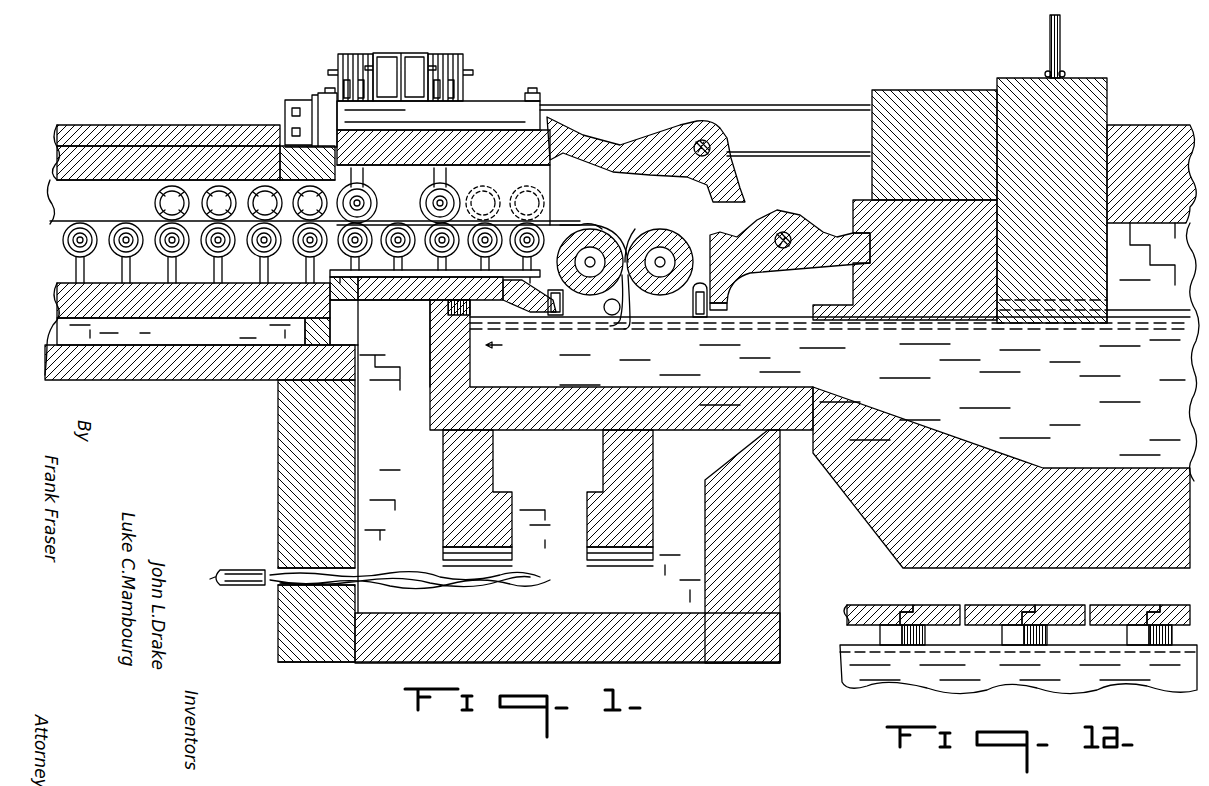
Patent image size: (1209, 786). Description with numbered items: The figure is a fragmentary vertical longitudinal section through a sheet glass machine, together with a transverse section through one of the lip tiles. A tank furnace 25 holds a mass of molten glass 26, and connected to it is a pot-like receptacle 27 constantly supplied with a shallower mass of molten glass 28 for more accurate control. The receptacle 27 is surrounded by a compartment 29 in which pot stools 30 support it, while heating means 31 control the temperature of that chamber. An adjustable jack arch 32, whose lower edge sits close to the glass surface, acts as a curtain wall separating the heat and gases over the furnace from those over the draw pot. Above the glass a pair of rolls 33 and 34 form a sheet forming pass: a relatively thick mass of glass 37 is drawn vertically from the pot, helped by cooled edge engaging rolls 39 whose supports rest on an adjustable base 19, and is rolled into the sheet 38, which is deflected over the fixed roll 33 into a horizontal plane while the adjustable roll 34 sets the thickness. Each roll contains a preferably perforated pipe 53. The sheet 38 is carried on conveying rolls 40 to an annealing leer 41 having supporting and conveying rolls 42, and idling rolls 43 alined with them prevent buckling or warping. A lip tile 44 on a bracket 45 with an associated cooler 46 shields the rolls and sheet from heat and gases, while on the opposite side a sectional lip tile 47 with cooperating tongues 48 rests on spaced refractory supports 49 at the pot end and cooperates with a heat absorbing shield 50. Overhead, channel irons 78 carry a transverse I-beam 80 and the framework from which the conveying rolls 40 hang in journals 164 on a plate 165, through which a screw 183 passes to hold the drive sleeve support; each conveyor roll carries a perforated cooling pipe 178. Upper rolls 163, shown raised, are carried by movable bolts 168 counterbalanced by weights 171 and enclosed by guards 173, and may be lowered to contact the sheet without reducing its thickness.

In FIG. 1, the adjustable base 19 is at (496, 357).
In FIG. 1, the tank furnace 25 is at (1114, 566).
In FIG. 1, the molten glass 26 is at (1138, 333).
In FIG. 1, the receptacle 27 is at (432, 404).
In FIG. 1, the molten glass 28 is at (546, 392).
In FIG. 1, the compartment 29 is at (302, 492).
In FIG. 1, the pot stools 30 is at (458, 441).
In FIG. 1, the heating means 31 is at (238, 582).
In FIG. 1, the jack arch 32 is at (1098, 106).
In FIG. 1, the roll 33 is at (590, 238).
In FIG. 1, the roll 34 is at (664, 236).
In FIG. 1, the mass of glass 37 is at (626, 333).
In FIG. 1, the sheet 38 is at (564, 226).
In FIG. 1, the edge engaging rolls 39 is at (625, 311).
In FIG. 1, the conveying rolls 40 is at (415, 284).
In FIG. 1, the annealing leer 41 is at (145, 146).
In FIG. 1, the supporting and conveying rolls 42 is at (174, 262).
In FIG. 1, the rolls 43 is at (155, 202).
In FIG. 1, the lip tile 44 is at (823, 231).
In FIG. 1, the bracket 45 is at (784, 232).
In FIG. 1, the cooler 46 is at (718, 308).
In FIG. 1, the lip tile 47 is at (409, 317).
In FIG. 19, the lip tile 47 is at (847, 602).
In FIG. 19, the tongues 48 is at (1004, 606).
In FIG. 1, the supports 49 is at (470, 316).
In FIG. 19, the supports 49 is at (1126, 642).
In FIG. 1, the heat absorbing shield 50 is at (568, 308).
In FIG. 1, the perforated pipe 53 is at (634, 240).
In FIG. 1, the channel iron 78 is at (606, 109).
In FIG. 1, the transverse I-beam 80 is at (408, 53).
In FIG. 1, the upper rolls 163 is at (374, 203).
In FIG. 1, the journals 164 is at (348, 288).
In FIG. 1, the plate 165 is at (314, 272).
In FIG. 1, the movable bolts 168 is at (403, 128).
In FIG. 1, the weight 171 is at (343, 54).
In FIG. 1, the guards 173 is at (542, 165).
In FIG. 1, the perforated pipe 178 is at (220, 260).
In FIG. 1, the screw 183 is at (540, 304).